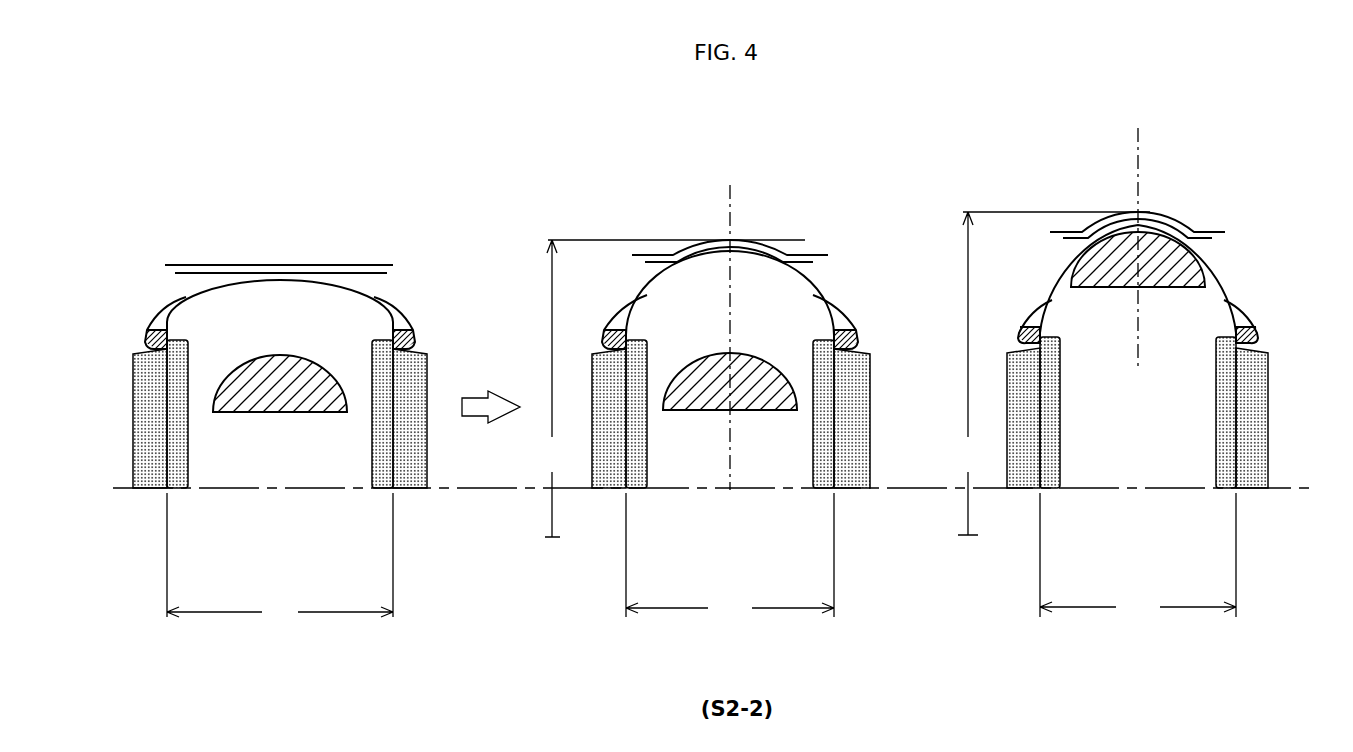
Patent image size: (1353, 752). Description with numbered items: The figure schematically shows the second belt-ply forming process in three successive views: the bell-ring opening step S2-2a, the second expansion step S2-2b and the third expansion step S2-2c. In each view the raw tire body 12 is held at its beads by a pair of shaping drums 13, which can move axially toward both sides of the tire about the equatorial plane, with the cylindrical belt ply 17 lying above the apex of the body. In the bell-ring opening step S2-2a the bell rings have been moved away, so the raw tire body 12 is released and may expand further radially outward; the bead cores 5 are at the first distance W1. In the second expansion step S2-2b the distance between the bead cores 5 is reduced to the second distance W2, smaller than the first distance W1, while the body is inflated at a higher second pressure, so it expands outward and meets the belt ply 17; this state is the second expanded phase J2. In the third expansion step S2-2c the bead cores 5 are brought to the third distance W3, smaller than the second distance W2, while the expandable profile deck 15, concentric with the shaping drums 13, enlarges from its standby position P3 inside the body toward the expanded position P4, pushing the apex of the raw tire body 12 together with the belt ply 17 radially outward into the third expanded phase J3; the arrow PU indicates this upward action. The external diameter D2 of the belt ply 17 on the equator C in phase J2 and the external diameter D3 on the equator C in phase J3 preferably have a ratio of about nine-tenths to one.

The bead core 5 is at (606, 331).
The raw tire body 12 is at (347, 292).
The shaping drum 13 is at (158, 490).
The profile deck 15 is at (300, 398).
The cylindrical belt ply 17 is at (312, 264).
The equator C is at (933, 298).
The standby position P3 is at (265, 432).
The expanded position P4 is at (1093, 318).
The upward force PU is at (1171, 346).
The bell-ring opening step S2-2a is at (221, 210).
The second expansion step S2-2b is at (655, 211).
The third expansion step S2-2c is at (1074, 183).
The second expanded phase J2 is at (812, 220).
The third expanded phase J3 is at (1241, 201).
The first distance W1 is at (280, 558).
The second distance W2 is at (730, 556).
The third distance W3 is at (1138, 556).
The external diameter D2 is at (673, 388).
The external diameter D3 is at (1053, 373).